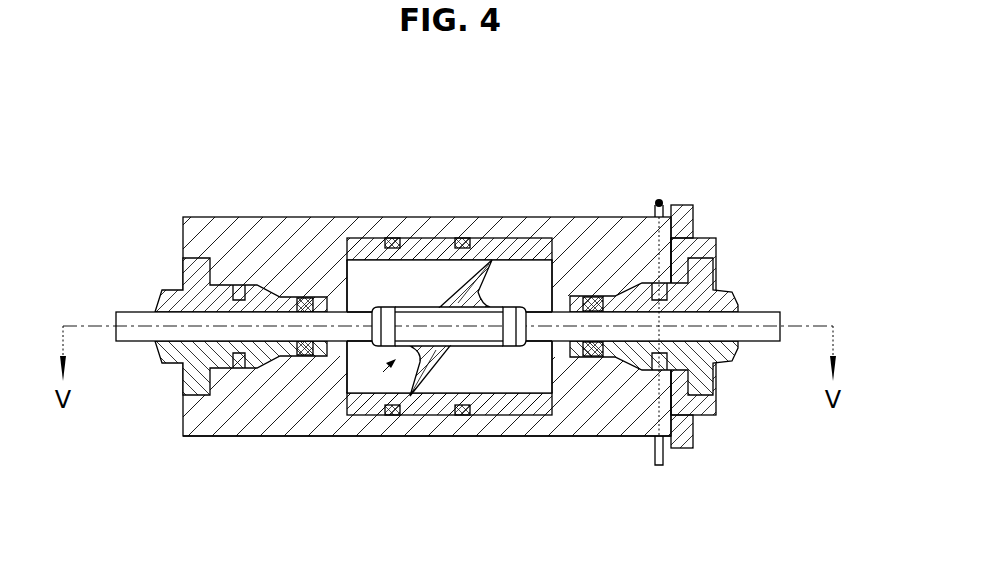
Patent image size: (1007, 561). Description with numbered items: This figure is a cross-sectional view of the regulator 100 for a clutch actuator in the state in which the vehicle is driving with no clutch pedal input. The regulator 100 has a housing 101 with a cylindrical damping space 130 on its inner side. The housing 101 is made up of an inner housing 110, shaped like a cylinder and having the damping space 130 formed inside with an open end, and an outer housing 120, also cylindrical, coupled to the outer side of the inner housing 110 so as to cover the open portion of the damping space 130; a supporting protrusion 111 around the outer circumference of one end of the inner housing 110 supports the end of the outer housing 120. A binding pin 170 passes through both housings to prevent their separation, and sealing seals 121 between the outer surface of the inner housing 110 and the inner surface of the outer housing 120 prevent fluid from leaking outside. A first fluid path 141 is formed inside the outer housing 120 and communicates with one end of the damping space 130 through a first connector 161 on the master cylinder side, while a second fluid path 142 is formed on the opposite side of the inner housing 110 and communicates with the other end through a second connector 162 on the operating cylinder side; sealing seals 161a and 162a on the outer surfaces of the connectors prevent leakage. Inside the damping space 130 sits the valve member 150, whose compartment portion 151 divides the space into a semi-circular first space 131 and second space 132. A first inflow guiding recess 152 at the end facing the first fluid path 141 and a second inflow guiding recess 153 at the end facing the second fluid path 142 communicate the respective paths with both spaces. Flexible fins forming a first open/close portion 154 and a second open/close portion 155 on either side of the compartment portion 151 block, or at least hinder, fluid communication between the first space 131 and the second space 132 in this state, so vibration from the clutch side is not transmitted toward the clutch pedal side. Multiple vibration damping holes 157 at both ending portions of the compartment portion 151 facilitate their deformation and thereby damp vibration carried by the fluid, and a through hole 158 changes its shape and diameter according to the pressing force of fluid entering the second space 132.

The regulator 100 is at (677, 130).
The housing 101 is at (592, 138).
The inner housing 110 is at (596, 262).
The supporting protrusion 111 is at (683, 212).
The outer housing 120 is at (532, 232).
The sealing seals 121 is at (458, 420).
The damping space 130 is at (430, 262).
The first space 131 is at (358, 248).
The second space 132 is at (476, 418).
The first fluid path 141 is at (268, 240).
The second fluid path 142 is at (585, 405).
The valve member 150 is at (413, 349).
The compartment portion 151 is at (500, 380).
The first inflow guiding recess 152 is at (335, 365).
The second inflow guiding recess 153 is at (546, 380).
The first open/close portion 154 is at (489, 260).
The second open/close portion 155 is at (392, 414).
The vibration damping holes 157 is at (392, 238).
The through hole 158 is at (512, 306).
The first connector 161 is at (180, 290).
The sealing seal 161a is at (245, 385).
The second connector 162 is at (717, 292).
The sealing seal 162a is at (632, 430).
The binding pin 170 is at (658, 200).